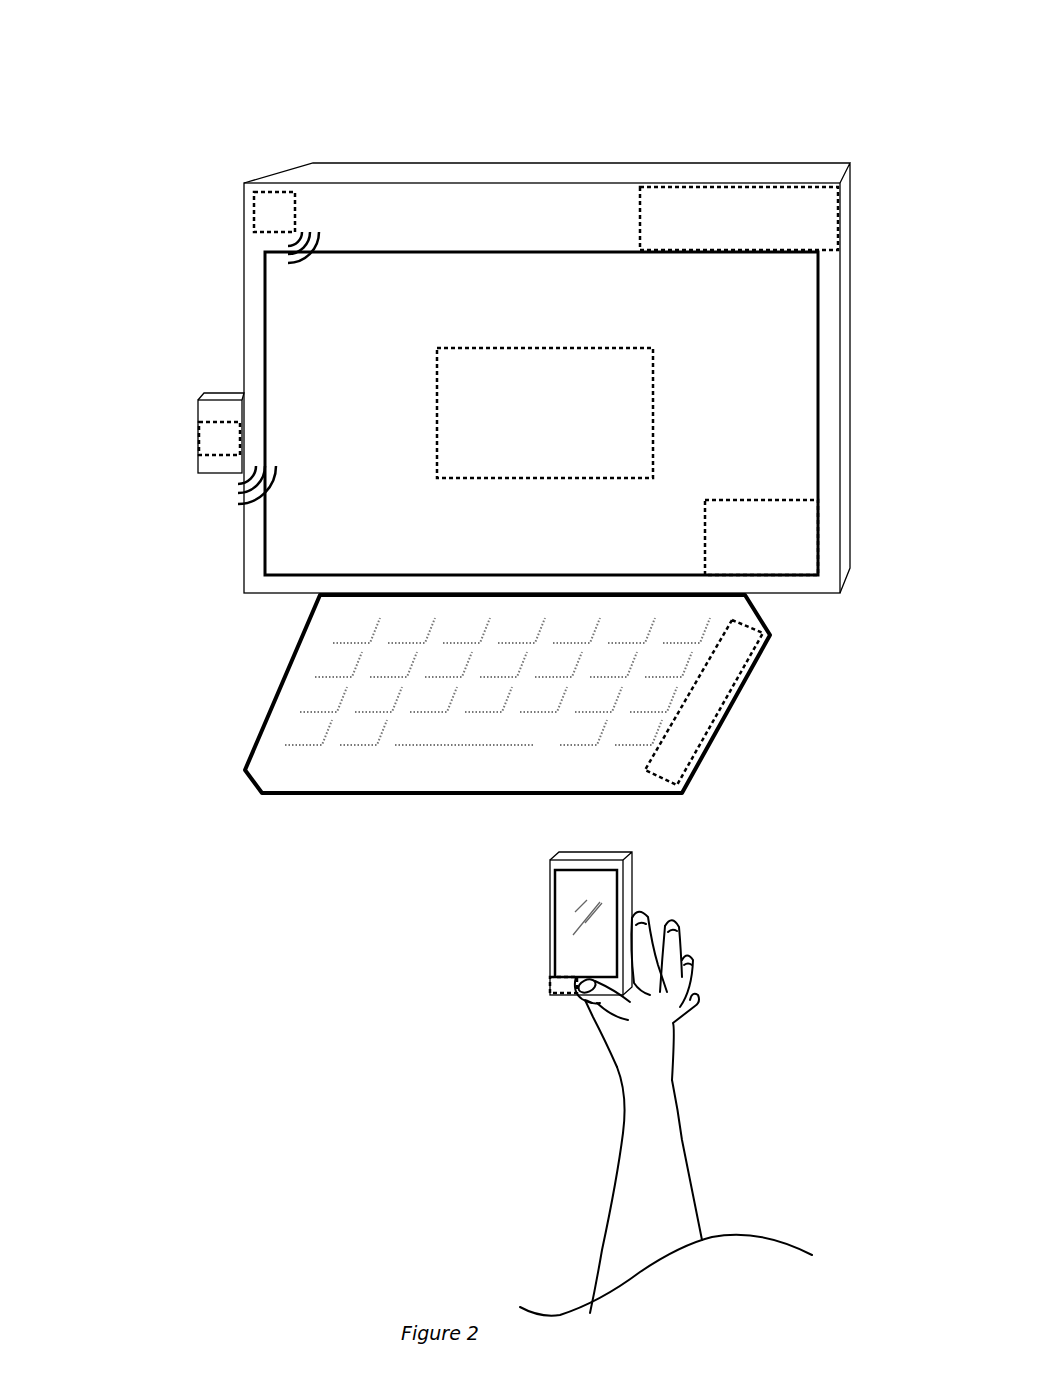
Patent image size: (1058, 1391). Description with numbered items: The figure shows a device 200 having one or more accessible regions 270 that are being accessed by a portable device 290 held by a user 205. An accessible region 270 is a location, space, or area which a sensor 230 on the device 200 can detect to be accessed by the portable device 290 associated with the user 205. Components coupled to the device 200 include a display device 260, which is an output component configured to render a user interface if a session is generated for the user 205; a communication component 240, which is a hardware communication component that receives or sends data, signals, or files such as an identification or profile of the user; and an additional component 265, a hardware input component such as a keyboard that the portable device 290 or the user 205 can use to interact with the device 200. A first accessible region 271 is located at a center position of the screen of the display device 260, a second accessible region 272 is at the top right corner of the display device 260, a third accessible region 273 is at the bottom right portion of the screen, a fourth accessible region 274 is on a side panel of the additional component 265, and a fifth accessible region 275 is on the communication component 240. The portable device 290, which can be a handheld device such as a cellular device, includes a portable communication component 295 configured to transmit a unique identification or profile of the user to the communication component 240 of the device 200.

The device 200 is at (176, 56).
The user 205 is at (666, 1114).
The sensor 230 is at (287, 186).
The communication component 240 is at (221, 398).
The display device 260 is at (541, 385).
The additional component 265 is at (278, 756).
The accessible regions 270 is at (764, 146).
The first accessible region 271 is at (545, 413).
The second accessible region 272 is at (739, 218).
The third accessible region 273 is at (761, 537).
The fourth accessible region 274 is at (742, 664).
The fifth accessible region 275 is at (191, 432).
The portable device 290 is at (624, 838).
The portable communication component 295 is at (547, 973).